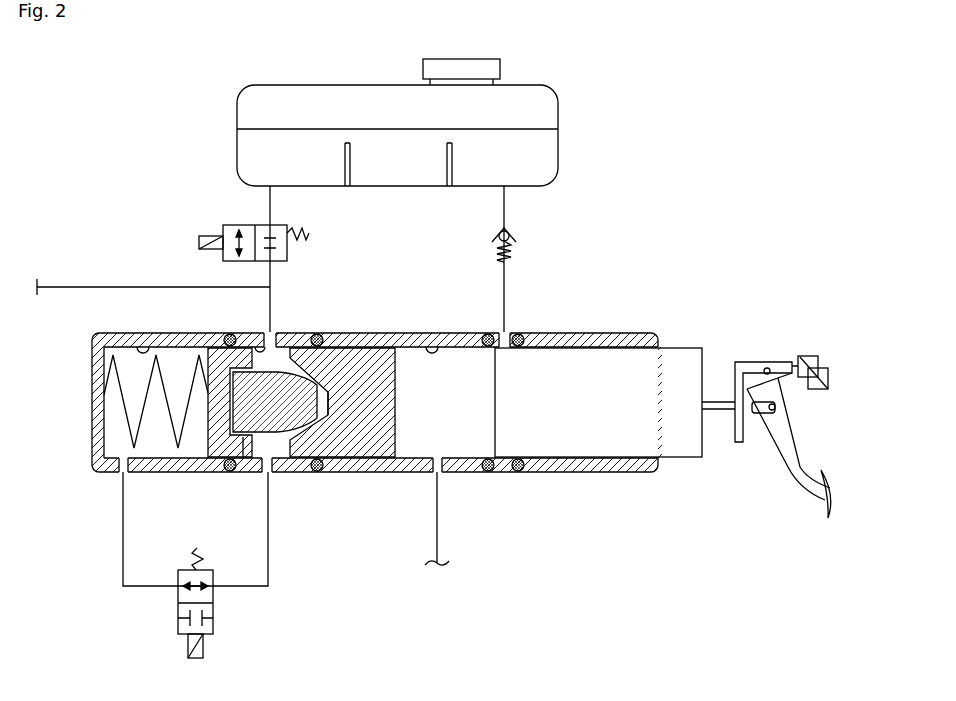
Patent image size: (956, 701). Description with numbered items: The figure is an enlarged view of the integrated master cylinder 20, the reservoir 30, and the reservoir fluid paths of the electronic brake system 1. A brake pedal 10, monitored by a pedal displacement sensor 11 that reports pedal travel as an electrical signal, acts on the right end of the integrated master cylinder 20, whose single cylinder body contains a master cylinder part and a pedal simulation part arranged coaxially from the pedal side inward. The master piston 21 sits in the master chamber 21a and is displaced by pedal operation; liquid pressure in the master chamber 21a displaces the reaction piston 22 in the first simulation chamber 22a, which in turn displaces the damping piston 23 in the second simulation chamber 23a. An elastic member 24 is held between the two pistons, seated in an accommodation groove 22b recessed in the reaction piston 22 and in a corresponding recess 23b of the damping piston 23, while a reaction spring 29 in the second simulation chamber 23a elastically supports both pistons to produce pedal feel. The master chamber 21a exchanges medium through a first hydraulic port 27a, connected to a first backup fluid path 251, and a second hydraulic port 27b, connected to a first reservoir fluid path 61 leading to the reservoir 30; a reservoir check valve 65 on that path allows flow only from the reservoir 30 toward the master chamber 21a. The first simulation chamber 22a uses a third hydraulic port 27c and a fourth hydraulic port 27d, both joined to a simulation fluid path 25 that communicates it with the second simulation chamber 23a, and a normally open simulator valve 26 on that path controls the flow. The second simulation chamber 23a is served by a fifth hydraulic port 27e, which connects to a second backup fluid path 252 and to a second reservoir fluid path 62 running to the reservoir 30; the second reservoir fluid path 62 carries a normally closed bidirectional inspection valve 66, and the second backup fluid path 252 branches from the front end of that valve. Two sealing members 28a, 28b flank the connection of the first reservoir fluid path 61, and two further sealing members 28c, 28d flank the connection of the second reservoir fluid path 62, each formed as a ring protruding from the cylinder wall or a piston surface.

The electronic brake system 1 is at (203, 67).
The brake pedal 10 is at (785, 448).
The pedal displacement sensor 11 is at (828, 380).
The integrated master cylinder 20 is at (92, 365).
The master piston 21 is at (687, 360).
The master chamber 21a is at (432, 352).
The reaction piston 22 is at (372, 443).
The first simulation chamber 22a is at (256, 342).
The accommodation groove 22b is at (326, 418).
The damping piston 23 is at (214, 460).
The second simulation chamber 23a is at (141, 340).
The piston passage 23b is at (247, 458).
The elastic member 24 is at (262, 435).
The simulation fluid path 25 is at (122, 520).
The simulator valve 26 is at (213, 607).
The first hydraulic port 27a is at (437, 475).
The second hydraulic port 27b is at (507, 333).
The third hydraulic port 27c is at (272, 475).
The fourth hydraulic port 27d is at (121, 475).
The fifth hydraulic port 27e is at (268, 333).
The sealing member 28a is at (489, 471).
The sealing member 28b is at (520, 471).
The sealing member 28c is at (229, 334).
The sealing member 28d is at (318, 334).
The reaction spring 29 is at (127, 418).
The reservoir 30 is at (237, 152).
The first reservoir fluid path 61 is at (506, 280).
The second reservoir fluid path 62 is at (272, 277).
The reservoir check valve 65 is at (510, 236).
The inspection valve 66 is at (287, 228).
The first backup fluid path 251 is at (438, 527).
The second backup fluid path 252 is at (160, 287).